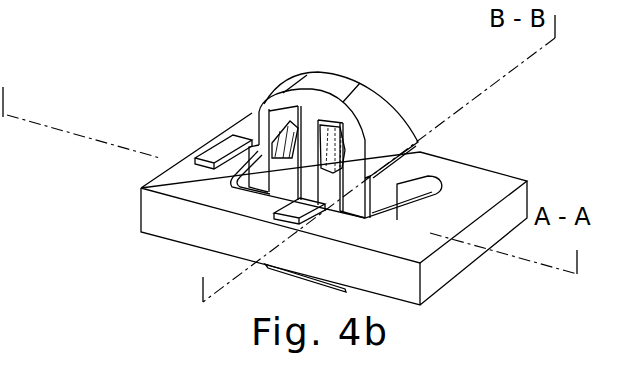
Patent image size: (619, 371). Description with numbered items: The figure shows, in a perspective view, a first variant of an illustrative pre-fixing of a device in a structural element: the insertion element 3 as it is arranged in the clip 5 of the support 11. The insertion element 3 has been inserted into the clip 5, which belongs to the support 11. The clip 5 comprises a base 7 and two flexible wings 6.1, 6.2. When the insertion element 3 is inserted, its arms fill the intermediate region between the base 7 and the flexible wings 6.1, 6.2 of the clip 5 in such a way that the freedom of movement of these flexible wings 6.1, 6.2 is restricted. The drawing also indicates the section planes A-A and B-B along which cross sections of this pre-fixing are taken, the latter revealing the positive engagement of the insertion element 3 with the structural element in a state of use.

The insertion element 3 is at (285, 138).
The clip 5 is at (330, 84).
The flexible wing 6.1 is at (258, 144).
The flexible wing 6.2 is at (395, 120).
The base 7 is at (300, 174).
The support 11 is at (167, 185).